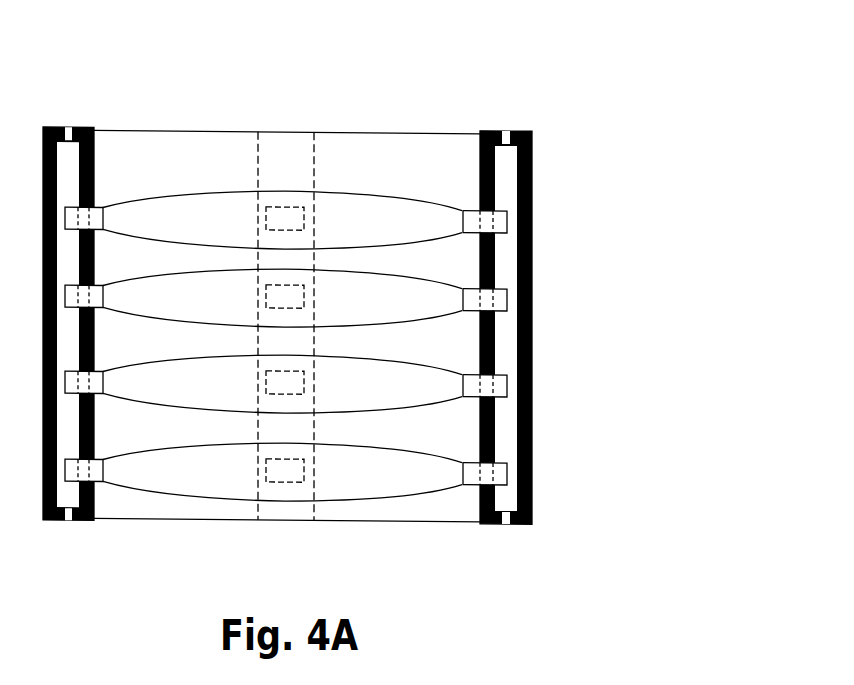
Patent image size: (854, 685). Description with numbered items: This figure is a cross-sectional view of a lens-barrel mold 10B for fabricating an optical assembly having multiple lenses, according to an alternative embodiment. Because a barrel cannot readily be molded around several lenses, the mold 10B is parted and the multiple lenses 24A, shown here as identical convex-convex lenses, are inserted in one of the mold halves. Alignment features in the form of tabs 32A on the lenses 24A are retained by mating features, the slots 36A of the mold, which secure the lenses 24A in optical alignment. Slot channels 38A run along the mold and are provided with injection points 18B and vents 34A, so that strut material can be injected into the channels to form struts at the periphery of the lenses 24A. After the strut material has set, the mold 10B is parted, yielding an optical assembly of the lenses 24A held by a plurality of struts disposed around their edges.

The mold 10B is at (589, 256).
The injection points 18B is at (70, 99).
The lenses 24A is at (412, 175).
The tabs 32A is at (326, 296).
The vents 34A is at (65, 550).
The slots 36A is at (503, 219).
The slot channels 38A is at (327, 349).